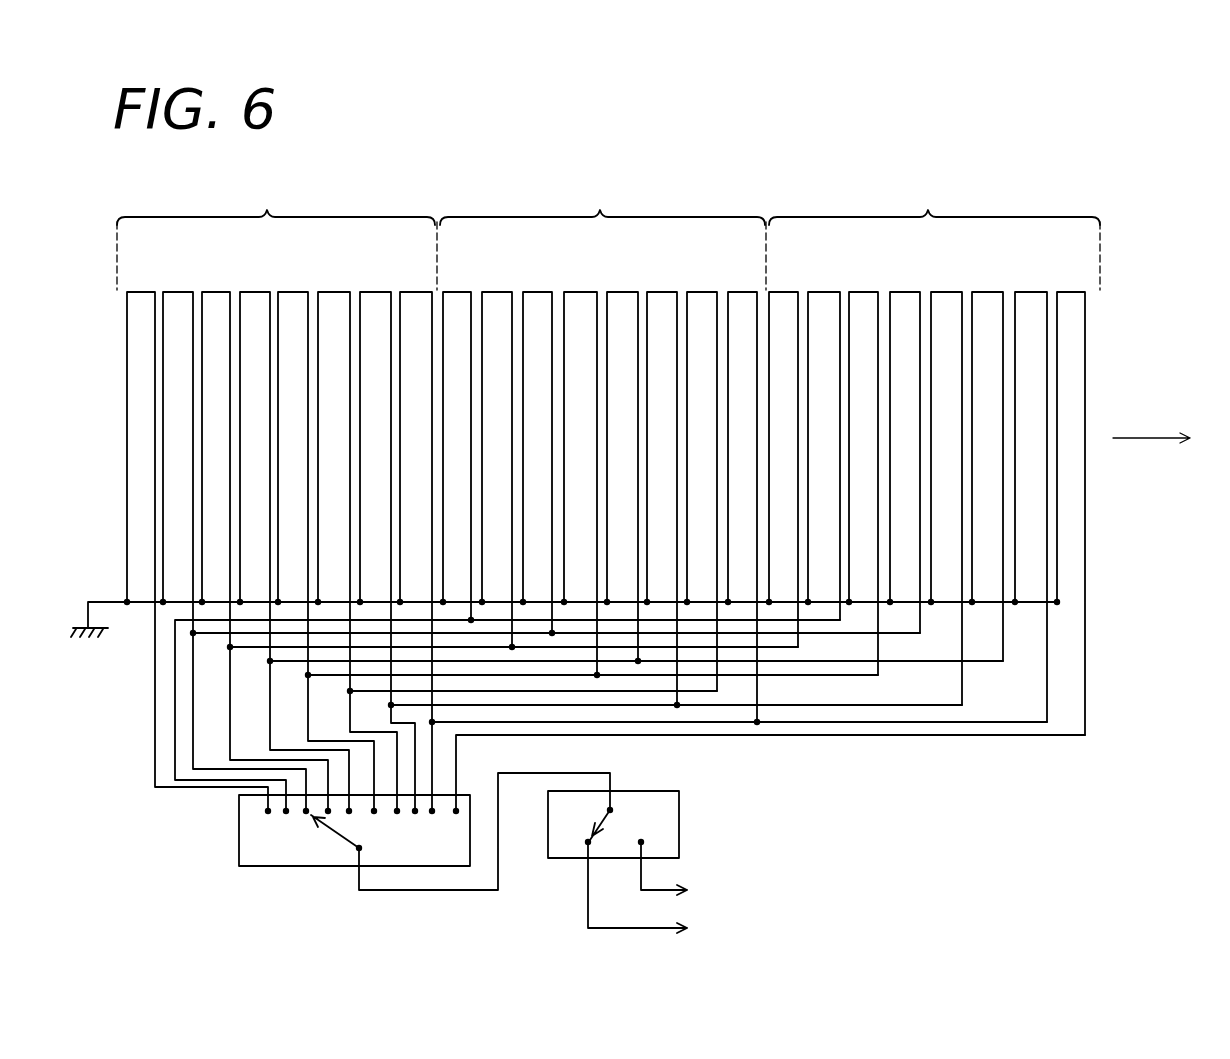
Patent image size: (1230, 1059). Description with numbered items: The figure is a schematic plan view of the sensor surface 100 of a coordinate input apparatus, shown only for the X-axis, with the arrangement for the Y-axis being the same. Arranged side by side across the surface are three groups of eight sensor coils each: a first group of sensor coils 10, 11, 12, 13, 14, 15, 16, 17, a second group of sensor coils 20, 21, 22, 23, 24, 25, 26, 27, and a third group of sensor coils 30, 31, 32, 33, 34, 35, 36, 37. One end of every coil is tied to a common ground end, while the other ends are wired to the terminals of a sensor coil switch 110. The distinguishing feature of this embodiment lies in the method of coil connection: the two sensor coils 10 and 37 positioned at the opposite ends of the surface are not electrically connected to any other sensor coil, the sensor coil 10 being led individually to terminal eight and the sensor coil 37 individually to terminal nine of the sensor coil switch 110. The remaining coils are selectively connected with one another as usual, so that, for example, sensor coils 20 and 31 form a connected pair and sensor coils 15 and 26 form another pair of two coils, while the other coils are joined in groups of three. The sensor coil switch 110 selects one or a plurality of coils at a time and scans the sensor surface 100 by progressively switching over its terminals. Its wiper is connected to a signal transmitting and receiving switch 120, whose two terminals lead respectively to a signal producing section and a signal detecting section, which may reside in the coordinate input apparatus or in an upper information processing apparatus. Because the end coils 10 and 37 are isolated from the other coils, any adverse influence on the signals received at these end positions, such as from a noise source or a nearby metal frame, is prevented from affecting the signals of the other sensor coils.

The sensor coil 10 is at (139, 291).
The sensor coil 11 is at (176, 291).
The sensor coil 12 is at (215, 291).
The sensor coil 13 is at (254, 291).
The sensor coil 14 is at (293, 291).
The sensor coil 15 is at (333, 291).
The sensor coil 16 is at (375, 291).
The sensor coil 17 is at (415, 291).
The sensor coil 20 is at (457, 291).
The sensor coil 21 is at (497, 291).
The sensor coil 22 is at (538, 291).
The sensor coil 23 is at (580, 291).
The sensor coil 24 is at (622, 291).
The sensor coil 25 is at (662, 291).
The sensor coil 26 is at (702, 291).
The sensor coil 27 is at (742, 291).
The sensor coil 30 is at (783, 291).
The sensor coil 31 is at (823, 291).
The sensor coil 32 is at (863, 291).
The sensor coil 33 is at (904, 291).
The sensor coil 34 is at (945, 291).
The sensor coil 35 is at (986, 291).
The sensor coil 36 is at (1029, 291).
The sensor coil 37 is at (1070, 291).
The sensor surface 100 is at (1119, 361).
The sensor coil switch 110 is at (238, 832).
The signal transmitting and receiving switch 120 is at (679, 820).